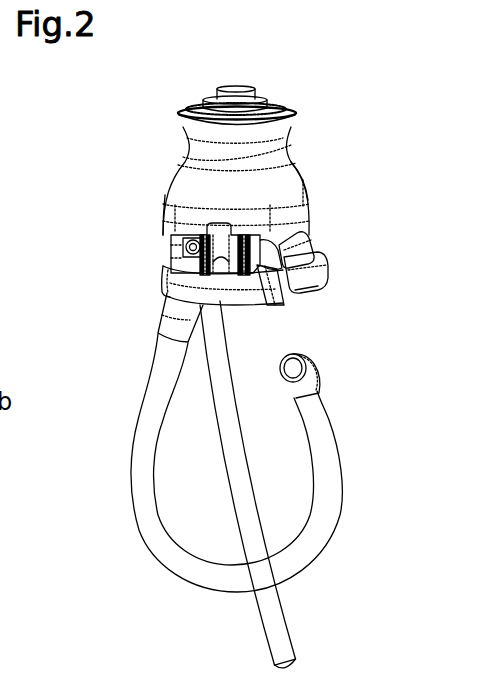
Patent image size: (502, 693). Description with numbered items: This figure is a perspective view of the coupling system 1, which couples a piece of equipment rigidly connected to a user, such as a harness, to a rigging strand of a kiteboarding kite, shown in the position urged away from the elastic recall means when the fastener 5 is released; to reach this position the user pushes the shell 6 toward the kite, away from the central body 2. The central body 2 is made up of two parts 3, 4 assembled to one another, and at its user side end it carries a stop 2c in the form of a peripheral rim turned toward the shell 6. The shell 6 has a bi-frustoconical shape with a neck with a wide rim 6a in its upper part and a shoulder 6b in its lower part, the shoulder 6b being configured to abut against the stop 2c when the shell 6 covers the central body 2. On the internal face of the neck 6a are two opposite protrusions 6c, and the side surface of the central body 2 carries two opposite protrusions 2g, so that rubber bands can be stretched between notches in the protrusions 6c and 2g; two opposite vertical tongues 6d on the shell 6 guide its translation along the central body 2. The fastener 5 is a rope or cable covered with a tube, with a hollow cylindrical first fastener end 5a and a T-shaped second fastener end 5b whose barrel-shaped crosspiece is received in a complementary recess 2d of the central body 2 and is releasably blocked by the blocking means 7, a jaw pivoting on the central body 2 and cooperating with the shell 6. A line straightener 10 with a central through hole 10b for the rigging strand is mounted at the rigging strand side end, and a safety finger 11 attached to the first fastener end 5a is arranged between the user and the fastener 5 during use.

The coupling system 1 is at (104, 212).
The central body 2 is at (161, 281).
The stop 2c is at (232, 291).
The recess 2d is at (318, 247).
The protrusions 2g is at (167, 262).
The part 3 is at (160, 290).
The part 4 is at (293, 292).
The fastener 5 is at (150, 532).
The first fastener end 5a is at (175, 318).
The second fastener end 5b is at (320, 358).
The shell 6 is at (293, 186).
The neck with a wide rim 6a is at (293, 112).
The shoulder 6b is at (162, 190).
The protrusions 6c is at (200, 122).
The vertical tongues 6d is at (197, 102).
The blocking means 7 is at (330, 272).
The line straightener 10 is at (262, 103).
The central through hole 10b is at (234, 86).
The safety finger 11 is at (273, 612).